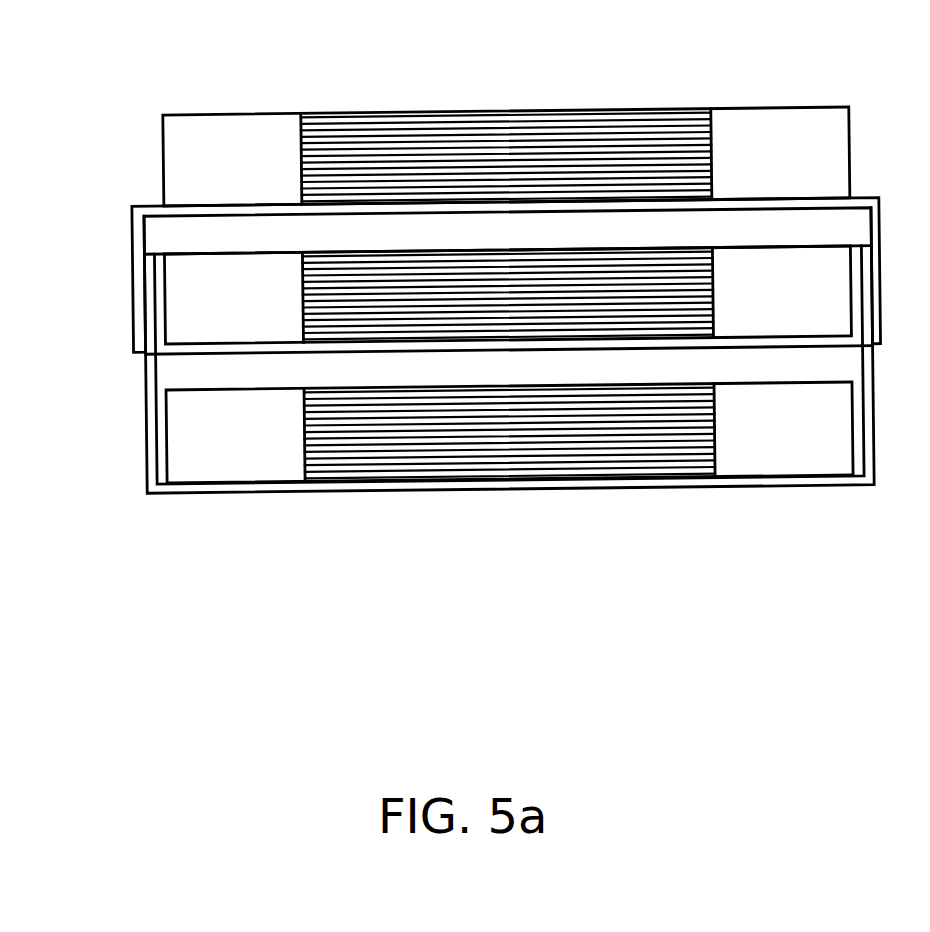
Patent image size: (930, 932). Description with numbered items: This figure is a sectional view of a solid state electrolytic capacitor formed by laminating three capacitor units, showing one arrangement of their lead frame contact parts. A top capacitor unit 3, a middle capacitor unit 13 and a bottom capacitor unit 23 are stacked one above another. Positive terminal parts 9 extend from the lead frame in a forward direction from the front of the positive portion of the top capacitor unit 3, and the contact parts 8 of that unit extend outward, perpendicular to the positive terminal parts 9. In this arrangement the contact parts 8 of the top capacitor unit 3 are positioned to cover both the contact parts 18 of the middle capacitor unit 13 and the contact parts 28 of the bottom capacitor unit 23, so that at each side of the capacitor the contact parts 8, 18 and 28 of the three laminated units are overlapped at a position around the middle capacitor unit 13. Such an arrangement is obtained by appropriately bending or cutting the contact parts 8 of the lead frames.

The top capacitor unit 3 is at (383, 111).
The contact parts 8 is at (133, 278).
The positive terminal parts 9 is at (218, 144).
The middle capacitor unit 13 is at (622, 247).
The contact parts 18 is at (157, 352).
The bottom capacitor unit 23 is at (518, 490).
The contact parts 28 is at (148, 322).